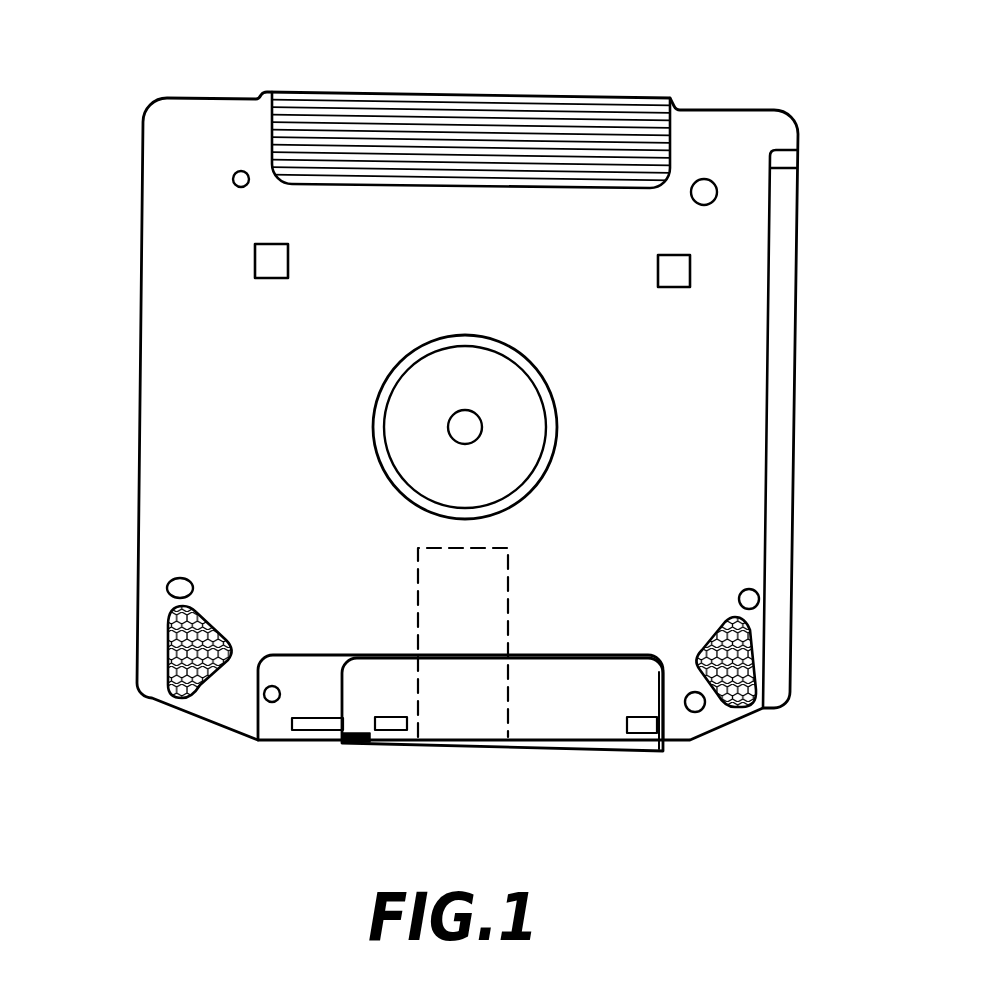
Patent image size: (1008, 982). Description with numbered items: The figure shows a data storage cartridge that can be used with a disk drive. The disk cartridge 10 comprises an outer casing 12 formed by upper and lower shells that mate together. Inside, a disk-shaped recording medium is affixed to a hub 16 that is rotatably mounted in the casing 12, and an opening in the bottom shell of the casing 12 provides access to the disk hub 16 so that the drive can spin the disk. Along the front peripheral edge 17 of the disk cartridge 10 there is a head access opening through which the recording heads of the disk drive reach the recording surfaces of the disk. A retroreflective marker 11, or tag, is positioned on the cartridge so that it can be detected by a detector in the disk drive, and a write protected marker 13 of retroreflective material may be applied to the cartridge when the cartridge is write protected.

The disk cartridge 10 is at (826, 108).
The retroreflective marker 11 is at (720, 632).
The outer casing 12 is at (140, 388).
The write protected marker 13 is at (207, 620).
The hub 16 is at (465, 335).
The front peripheral edge 17 is at (258, 742).